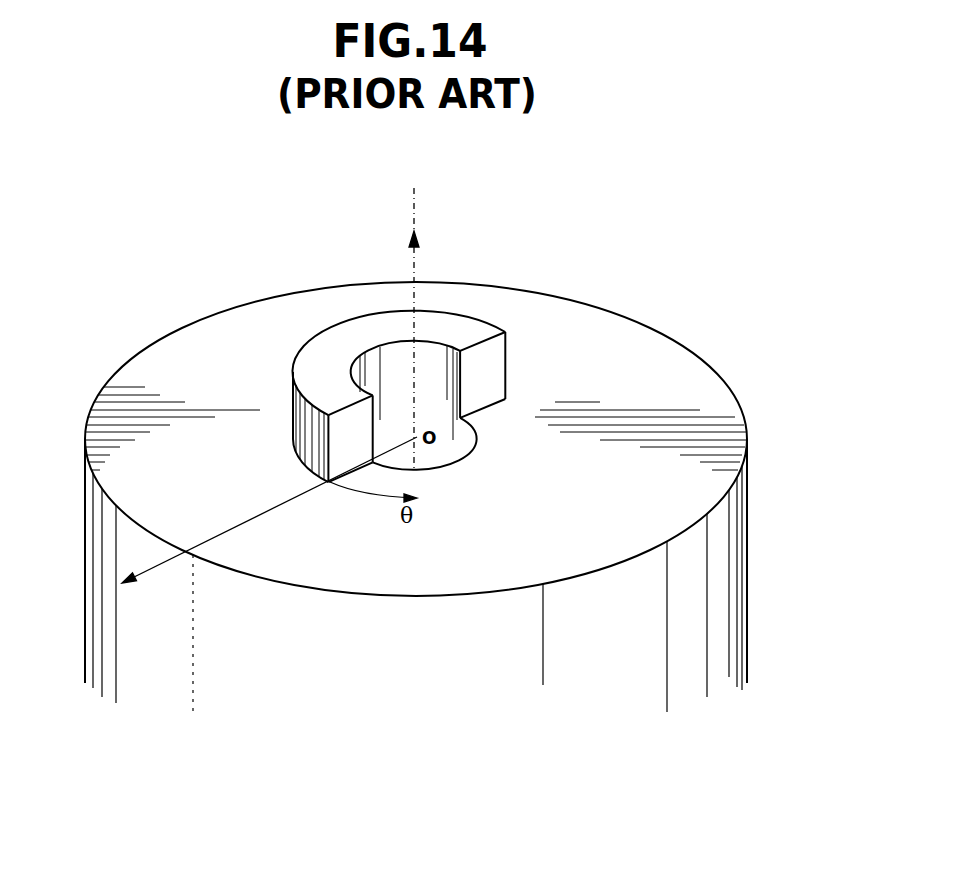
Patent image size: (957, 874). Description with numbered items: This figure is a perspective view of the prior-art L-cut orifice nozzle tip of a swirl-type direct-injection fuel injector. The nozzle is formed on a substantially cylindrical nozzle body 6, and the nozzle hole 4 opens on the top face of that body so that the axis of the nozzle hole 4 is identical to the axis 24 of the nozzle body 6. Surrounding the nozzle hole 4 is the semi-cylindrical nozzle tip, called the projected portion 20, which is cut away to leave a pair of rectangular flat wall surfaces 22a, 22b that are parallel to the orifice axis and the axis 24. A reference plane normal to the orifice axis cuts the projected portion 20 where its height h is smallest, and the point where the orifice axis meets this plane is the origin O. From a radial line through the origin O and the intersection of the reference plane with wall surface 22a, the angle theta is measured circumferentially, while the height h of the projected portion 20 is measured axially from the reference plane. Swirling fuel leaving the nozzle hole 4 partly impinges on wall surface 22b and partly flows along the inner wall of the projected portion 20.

The nozzle hole 4 is at (458, 445).
The nozzle body 6 is at (722, 577).
The projected portion 20 is at (414, 367).
The rectangular flat wall surface 22a is at (345, 445).
The rectangular flat wall surface 22b is at (497, 378).
The axis 24 is at (416, 191).